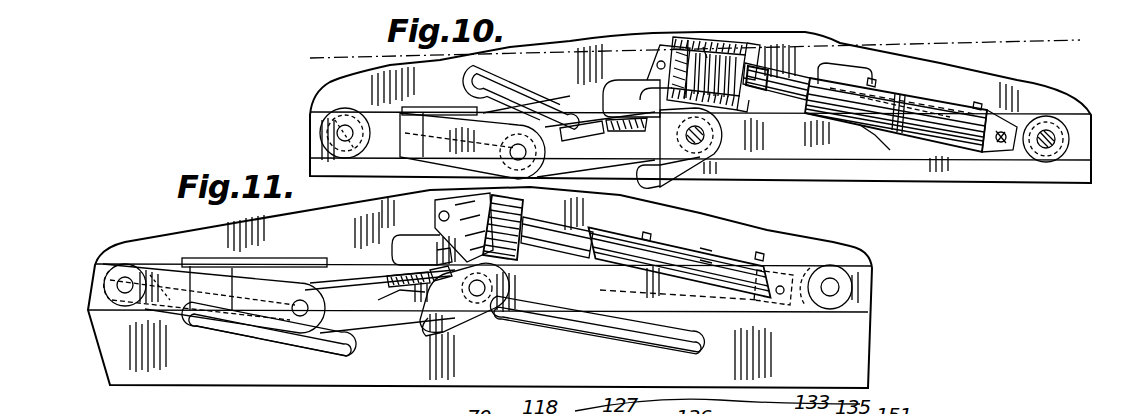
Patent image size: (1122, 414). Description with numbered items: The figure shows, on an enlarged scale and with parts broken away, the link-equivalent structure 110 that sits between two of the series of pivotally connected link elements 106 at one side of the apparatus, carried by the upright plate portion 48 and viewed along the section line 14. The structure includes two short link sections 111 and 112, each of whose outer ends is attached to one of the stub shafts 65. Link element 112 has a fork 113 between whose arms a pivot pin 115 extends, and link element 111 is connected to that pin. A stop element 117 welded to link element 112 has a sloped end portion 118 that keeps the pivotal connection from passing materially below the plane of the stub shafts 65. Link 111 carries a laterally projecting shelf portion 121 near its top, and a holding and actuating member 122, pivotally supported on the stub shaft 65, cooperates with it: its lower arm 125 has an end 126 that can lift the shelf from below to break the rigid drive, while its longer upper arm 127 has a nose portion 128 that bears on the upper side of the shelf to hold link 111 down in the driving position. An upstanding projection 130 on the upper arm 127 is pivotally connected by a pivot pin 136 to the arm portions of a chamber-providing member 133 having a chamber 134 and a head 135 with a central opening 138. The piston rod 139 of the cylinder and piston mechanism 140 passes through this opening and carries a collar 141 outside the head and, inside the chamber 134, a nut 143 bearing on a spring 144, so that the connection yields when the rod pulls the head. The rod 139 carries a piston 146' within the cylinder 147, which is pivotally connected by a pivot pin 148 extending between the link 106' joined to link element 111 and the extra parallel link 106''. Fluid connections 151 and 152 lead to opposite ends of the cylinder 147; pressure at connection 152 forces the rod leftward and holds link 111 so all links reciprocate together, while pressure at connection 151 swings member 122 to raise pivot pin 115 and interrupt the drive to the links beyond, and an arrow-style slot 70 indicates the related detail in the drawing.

In FIG. 10, the section line 14- 14 is at (310, 47).
In FIG. 10, the upright plate portion 48 is at (1003, 83).
In FIG. 11, the upright plate portion 48 is at (837, 354).
In FIG. 10, the stub shaft 65 is at (704, 143).
In FIG. 11, the stub shaft 65 is at (480, 288).
In FIG. 10, the slot 70 is at (514, 77).
In FIG. 11, the slot 70 is at (303, 342).
In FIG. 10, the link element 106 is at (671, 160).
In FIG. 11, the link element 106 is at (483, 285).
In FIG. 10, the link 106' is at (869, 169).
In FIG. 11, the extra parallel link 106'' is at (671, 332).
In FIG. 10, the link-equivalent structure 110 is at (391, 111).
In FIG. 11, the link-equivalent structure 110 is at (222, 278).
In FIG. 10, the link section 111 is at (568, 106).
In FIG. 11, the link section 111 is at (333, 270).
In FIG. 10, the link section 112 is at (376, 124).
In FIG. 11, the link section 112 is at (158, 280).
In FIG. 10, the fork 113 is at (478, 148).
In FIG. 11, the fork 113 is at (267, 310).
In FIG. 10, the pivot pin 115 is at (513, 147).
In FIG. 11, the pivot pin 115 is at (298, 312).
In FIG. 10, the stop element 117 is at (433, 112).
In FIG. 11, the stop element 117 is at (260, 270).
In FIG. 11, the sloped end portion 118 is at (386, 310).
In FIG. 10, the shelf portion 121 is at (606, 132).
In FIG. 11, the shelf portion 121 is at (408, 284).
In FIG. 10, the holding and actuating member 122 is at (700, 166).
In FIG. 11, the holding and actuating member 122 is at (470, 324).
In FIG. 10, the lower arm 125 is at (670, 176).
In FIG. 10, the end of lower arm 126 is at (650, 182).
In FIG. 11, the end of lower arm 126 is at (427, 326).
In FIG. 10, the upper arm 127 is at (623, 90).
In FIG. 11, the upper arm 127 is at (412, 250).
In FIG. 10, the nose portion 128 is at (585, 100).
In FIG. 11, the nose portion 128 is at (368, 237).
In FIG. 10, the upstanding projection 130 is at (655, 75).
In FIG. 10, the chamber-providing member 133 is at (705, 53).
In FIG. 11, the chamber-providing member 133 is at (443, 210).
In FIG. 10, the chamber 134 is at (730, 50).
In FIG. 10, the head 135 is at (722, 90).
In FIG. 11, the head 135 is at (522, 209).
In FIG. 10, the pivot pin 136 is at (663, 61).
In FIG. 10, the central opening 138 is at (742, 66).
In FIG. 10, the piston rod 139 is at (802, 82).
In FIG. 11, the piston rod 139 is at (550, 234).
In FIG. 10, the cylinder and piston mechanism 140 is at (930, 96).
In FIG. 11, the cylinder and piston mechanism 140 is at (686, 247).
In FIG. 10, the collar 141 is at (770, 100).
In FIG. 10, the nut 143 is at (688, 57).
In FIG. 10, the spring 144 is at (773, 41).
In FIG. 10, the cylinder portion 146' is at (895, 128).
In FIG. 10, the cylinder 147 is at (940, 142).
In FIG. 11, the cylinder 147 is at (727, 250).
In FIG. 10, the pivot pin 148 is at (1003, 142).
In FIG. 11, the pivot pin 148 is at (783, 286).
In FIG. 10, the fluid connection 151 is at (874, 81).
In FIG. 11, the fluid connection 151 is at (644, 232).
In FIG. 10, the fluid connection 152 is at (978, 102).
In FIG. 11, the fluid connection 152 is at (763, 249).